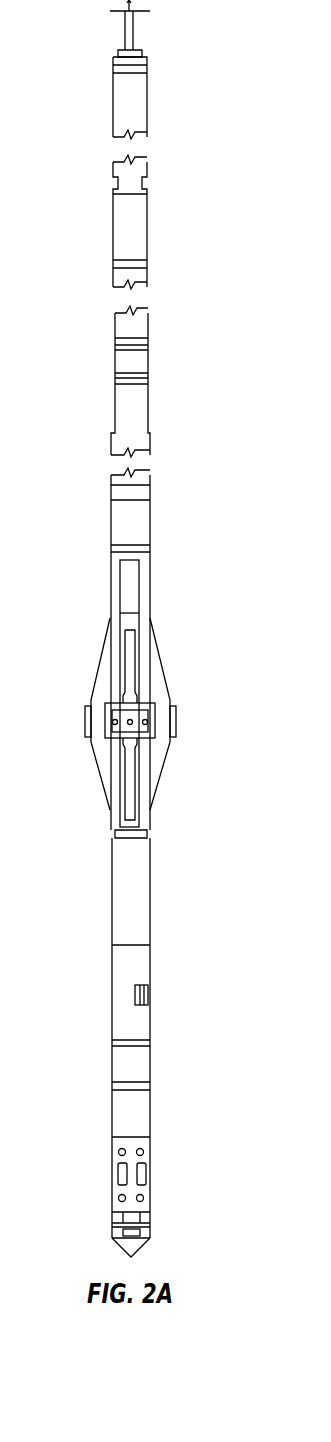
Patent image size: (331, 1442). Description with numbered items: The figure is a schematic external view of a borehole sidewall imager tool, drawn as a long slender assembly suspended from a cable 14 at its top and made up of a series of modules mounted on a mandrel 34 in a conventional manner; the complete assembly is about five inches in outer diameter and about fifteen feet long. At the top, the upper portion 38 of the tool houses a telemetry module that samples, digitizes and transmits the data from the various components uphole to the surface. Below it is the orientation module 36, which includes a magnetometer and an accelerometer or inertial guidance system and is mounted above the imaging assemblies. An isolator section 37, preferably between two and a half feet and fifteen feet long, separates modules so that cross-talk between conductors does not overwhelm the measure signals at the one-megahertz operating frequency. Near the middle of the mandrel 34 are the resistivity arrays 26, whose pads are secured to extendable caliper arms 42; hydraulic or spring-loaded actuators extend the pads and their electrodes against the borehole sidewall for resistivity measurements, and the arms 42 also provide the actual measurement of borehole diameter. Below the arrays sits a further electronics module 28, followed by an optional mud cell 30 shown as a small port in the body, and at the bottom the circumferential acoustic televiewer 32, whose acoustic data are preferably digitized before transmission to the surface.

The wireline cable 14 is at (135, 42).
The upper portion 38 is at (148, 90).
The orientation module 36 is at (148, 240).
The isolator section 37 is at (149, 360).
The mandrel 34 is at (151, 525).
The extendable caliper arms 42 is at (162, 665).
The resistivity arrays 26 is at (85, 712).
The electronics module 28 is at (150, 890).
The mud cell 30 is at (148, 995).
The circumferential acoustic televiewer 32 is at (151, 1172).